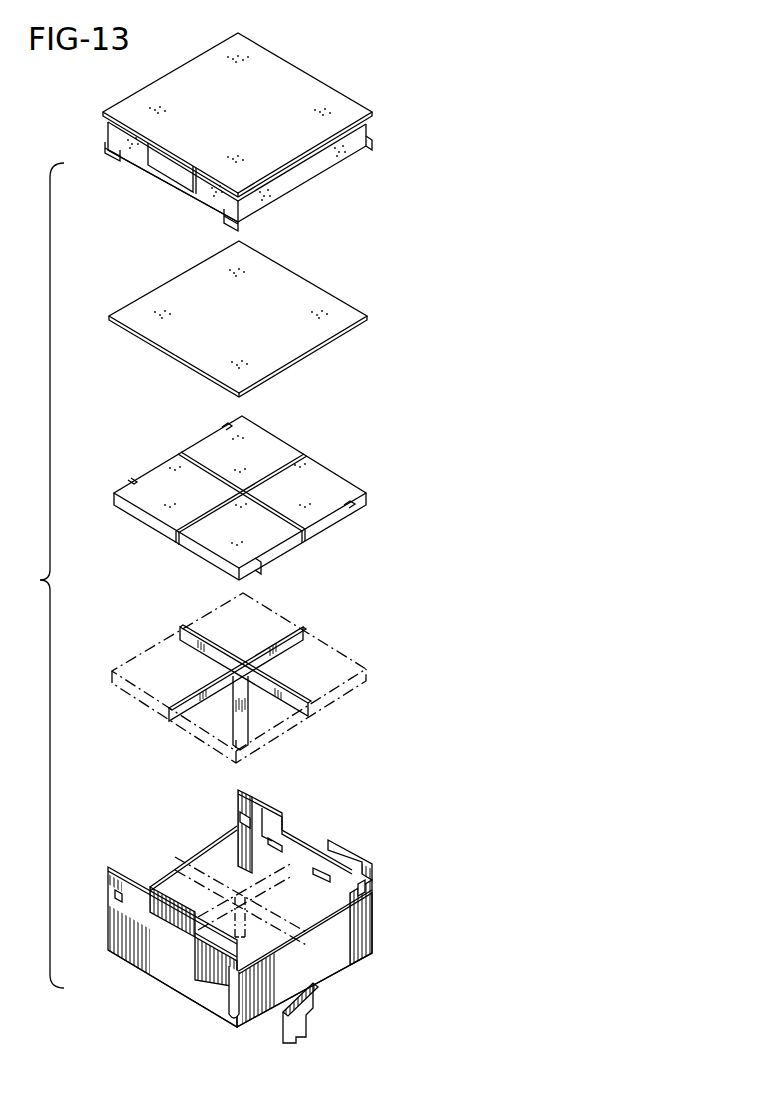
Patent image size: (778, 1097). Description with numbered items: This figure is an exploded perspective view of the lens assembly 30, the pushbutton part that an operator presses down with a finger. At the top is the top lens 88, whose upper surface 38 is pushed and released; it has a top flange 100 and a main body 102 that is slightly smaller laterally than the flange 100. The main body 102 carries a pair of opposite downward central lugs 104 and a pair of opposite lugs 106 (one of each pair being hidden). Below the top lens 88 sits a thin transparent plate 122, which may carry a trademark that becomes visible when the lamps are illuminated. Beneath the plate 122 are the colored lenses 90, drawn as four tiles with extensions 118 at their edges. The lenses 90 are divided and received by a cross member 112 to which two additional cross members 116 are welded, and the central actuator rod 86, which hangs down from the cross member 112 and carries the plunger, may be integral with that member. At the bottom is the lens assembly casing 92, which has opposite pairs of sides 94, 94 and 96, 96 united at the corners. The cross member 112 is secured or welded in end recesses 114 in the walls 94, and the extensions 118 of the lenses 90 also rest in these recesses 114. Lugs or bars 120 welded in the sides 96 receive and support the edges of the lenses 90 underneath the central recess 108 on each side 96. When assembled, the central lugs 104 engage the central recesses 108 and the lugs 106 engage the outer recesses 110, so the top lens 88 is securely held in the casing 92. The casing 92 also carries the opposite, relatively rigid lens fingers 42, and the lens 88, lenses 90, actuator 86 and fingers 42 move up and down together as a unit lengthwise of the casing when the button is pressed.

The lens assembly 30 is at (433, 867).
The upper surface 38 is at (288, 90).
The lens fingers 42 is at (308, 995).
The actuator rod 86 is at (248, 717).
The top lens 88 is at (262, 179).
The colored lenses 90 is at (272, 446).
The lens assembly casing 92 is at (418, 952).
The sides 94 is at (207, 845).
The sides 96 is at (337, 857).
The top flange 100 is at (352, 120).
The main body 102 is at (310, 183).
The downward central lugs 104 is at (182, 177).
The lugs 106 is at (114, 156).
The central recess 108 is at (285, 835).
The outer recesses 110 is at (247, 822).
The cross member 112 is at (278, 692).
The end recesses 114 is at (160, 887).
The cross members 116 is at (280, 635).
The extensions 118 is at (200, 443).
The lugs or bars 120 is at (268, 832).
The thin transparent plate 122 is at (248, 319).